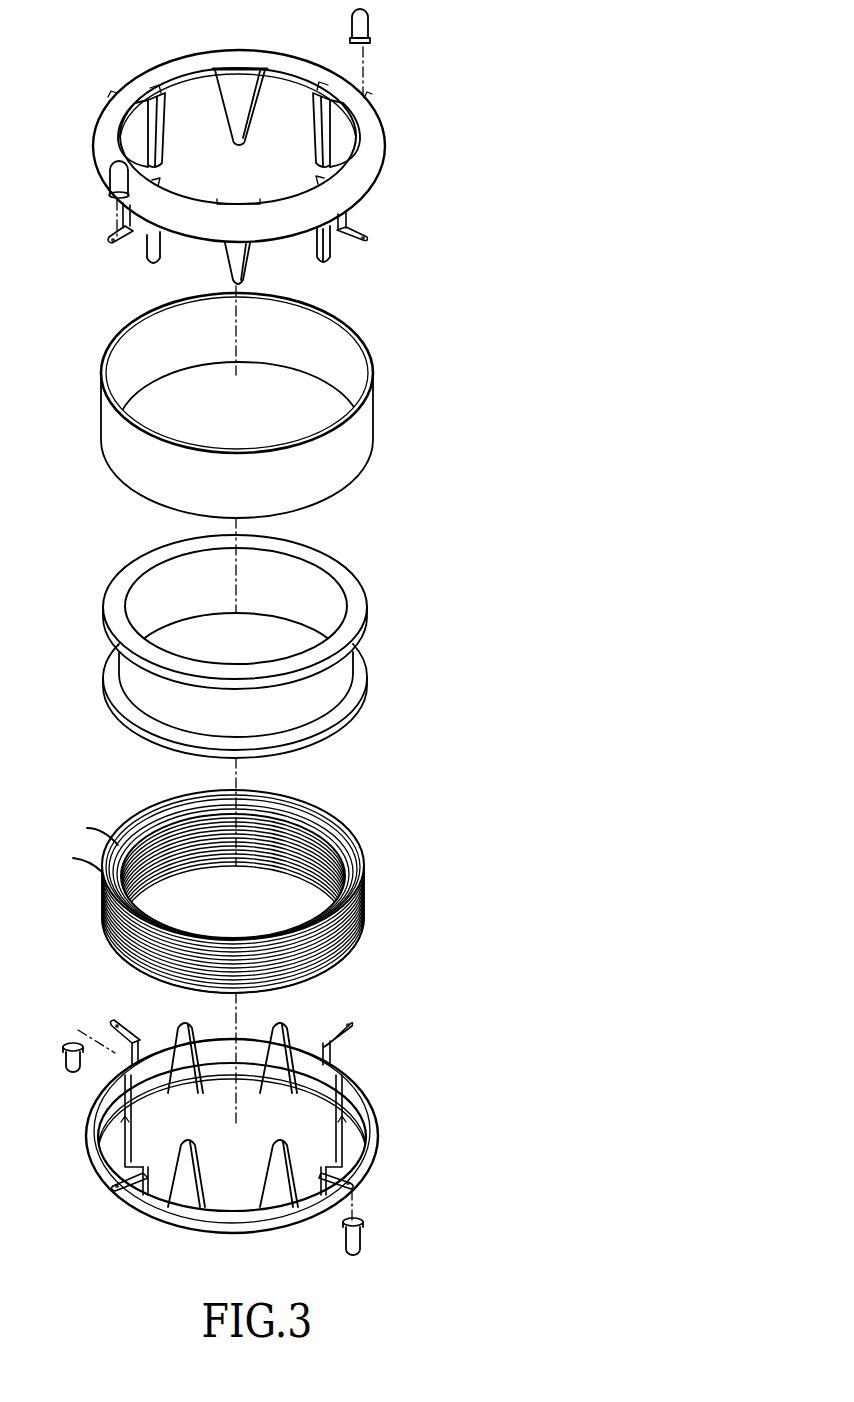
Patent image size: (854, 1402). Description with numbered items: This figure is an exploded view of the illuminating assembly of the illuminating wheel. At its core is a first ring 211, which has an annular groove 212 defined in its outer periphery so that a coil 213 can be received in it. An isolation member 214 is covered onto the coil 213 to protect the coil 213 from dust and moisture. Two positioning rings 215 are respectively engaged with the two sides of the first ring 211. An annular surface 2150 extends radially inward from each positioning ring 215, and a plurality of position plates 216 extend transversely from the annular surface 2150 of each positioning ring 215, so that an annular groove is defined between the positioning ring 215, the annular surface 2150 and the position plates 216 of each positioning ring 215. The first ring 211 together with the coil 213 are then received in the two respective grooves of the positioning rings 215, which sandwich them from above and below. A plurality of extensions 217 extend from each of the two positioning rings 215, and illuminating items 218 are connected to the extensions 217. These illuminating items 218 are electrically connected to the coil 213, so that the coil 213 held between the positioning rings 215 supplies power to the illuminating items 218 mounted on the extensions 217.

The first ring 211 is at (300, 650).
The annular groove 212 is at (320, 700).
The coil 213 is at (368, 915).
The isolation member 214 is at (366, 426).
The positioning ring 215 is at (384, 153).
The position plates 216 is at (328, 250).
The extensions 217 is at (360, 230).
The illuminating items 218 is at (362, 24).
The annular surface 2150 is at (378, 1146).